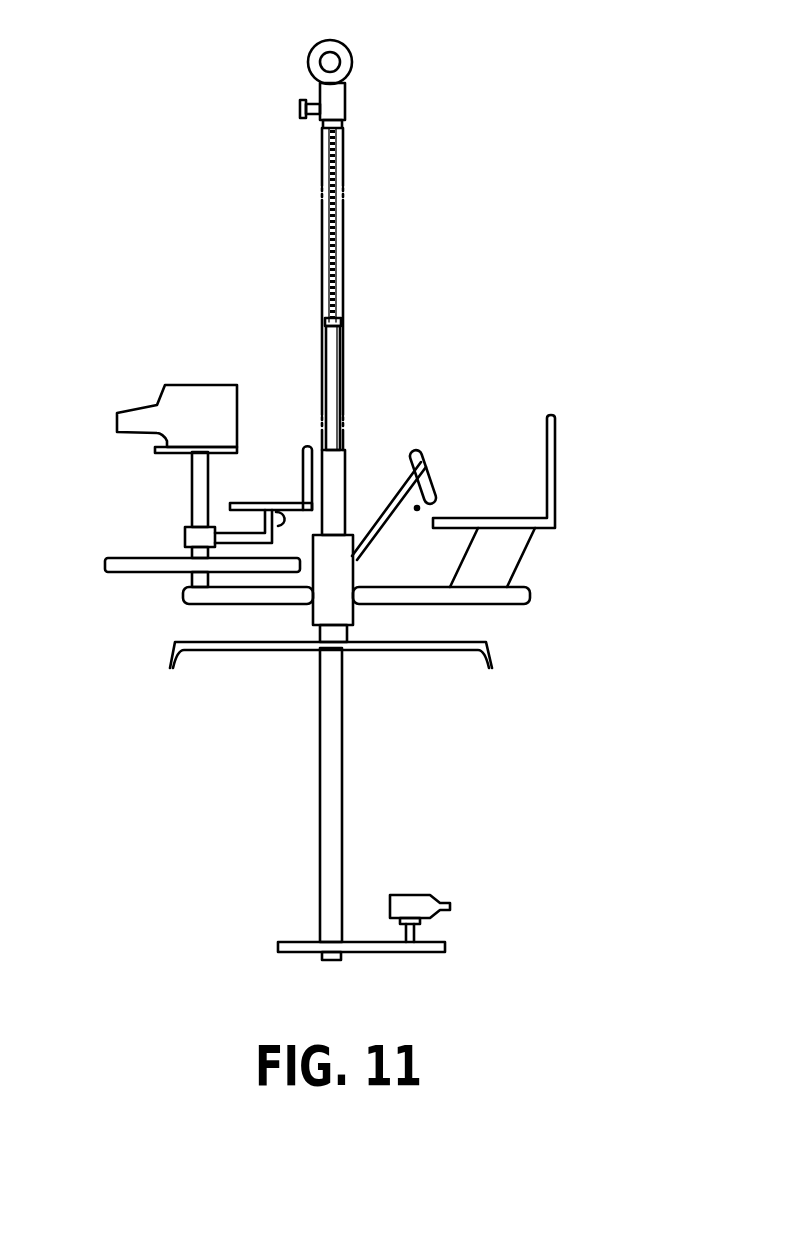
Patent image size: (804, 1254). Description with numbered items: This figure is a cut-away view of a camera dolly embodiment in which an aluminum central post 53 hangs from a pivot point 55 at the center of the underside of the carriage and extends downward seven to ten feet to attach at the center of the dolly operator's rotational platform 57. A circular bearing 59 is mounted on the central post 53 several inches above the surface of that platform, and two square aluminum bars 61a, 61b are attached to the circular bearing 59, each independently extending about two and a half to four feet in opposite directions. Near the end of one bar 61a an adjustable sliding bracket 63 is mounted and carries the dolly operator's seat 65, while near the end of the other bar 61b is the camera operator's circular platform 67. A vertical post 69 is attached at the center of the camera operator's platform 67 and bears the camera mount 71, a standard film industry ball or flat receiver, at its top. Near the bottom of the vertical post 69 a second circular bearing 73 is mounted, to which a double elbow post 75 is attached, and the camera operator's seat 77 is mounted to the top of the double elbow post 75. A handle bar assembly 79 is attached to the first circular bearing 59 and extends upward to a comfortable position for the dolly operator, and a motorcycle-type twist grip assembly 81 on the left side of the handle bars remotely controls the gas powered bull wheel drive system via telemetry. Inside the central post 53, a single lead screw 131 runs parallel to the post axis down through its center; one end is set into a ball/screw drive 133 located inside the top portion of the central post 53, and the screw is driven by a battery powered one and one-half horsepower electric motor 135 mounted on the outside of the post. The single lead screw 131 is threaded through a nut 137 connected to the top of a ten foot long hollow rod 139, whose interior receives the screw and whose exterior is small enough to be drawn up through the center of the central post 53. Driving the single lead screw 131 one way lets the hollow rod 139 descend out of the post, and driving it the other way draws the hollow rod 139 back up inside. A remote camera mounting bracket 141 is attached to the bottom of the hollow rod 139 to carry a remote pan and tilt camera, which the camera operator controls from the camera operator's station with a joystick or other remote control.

The central post 53 is at (360, 438).
The pivot point 55 is at (354, 60).
The dolly operator's rotational platform 57 is at (493, 663).
The circular bearing 59 is at (296, 614).
The square aluminum bar 61a is at (532, 605).
The square aluminum bar 61b is at (181, 592).
The adjustable sliding bracket 63 is at (537, 545).
The dolly operator's seat 65 is at (557, 422).
The camera operator's circular platform 67 is at (105, 563).
The vertical post 69 is at (190, 487).
The camera mount 71 is at (166, 452).
The second circular bearing 73 is at (184, 537).
The double elbow post 75 is at (284, 514).
The camera operator's seat 77 is at (302, 448).
The handle bar assembly 79 is at (382, 537).
The twist grip assembly 81 is at (446, 473).
The single lead screw 131 is at (341, 168).
The ball/screw drive 133 is at (346, 122).
The electric motor 135 is at (299, 110).
The nut 137 is at (342, 323).
The hollow rod 139 is at (332, 368).
The remote camera mounting bracket 141 is at (447, 944).